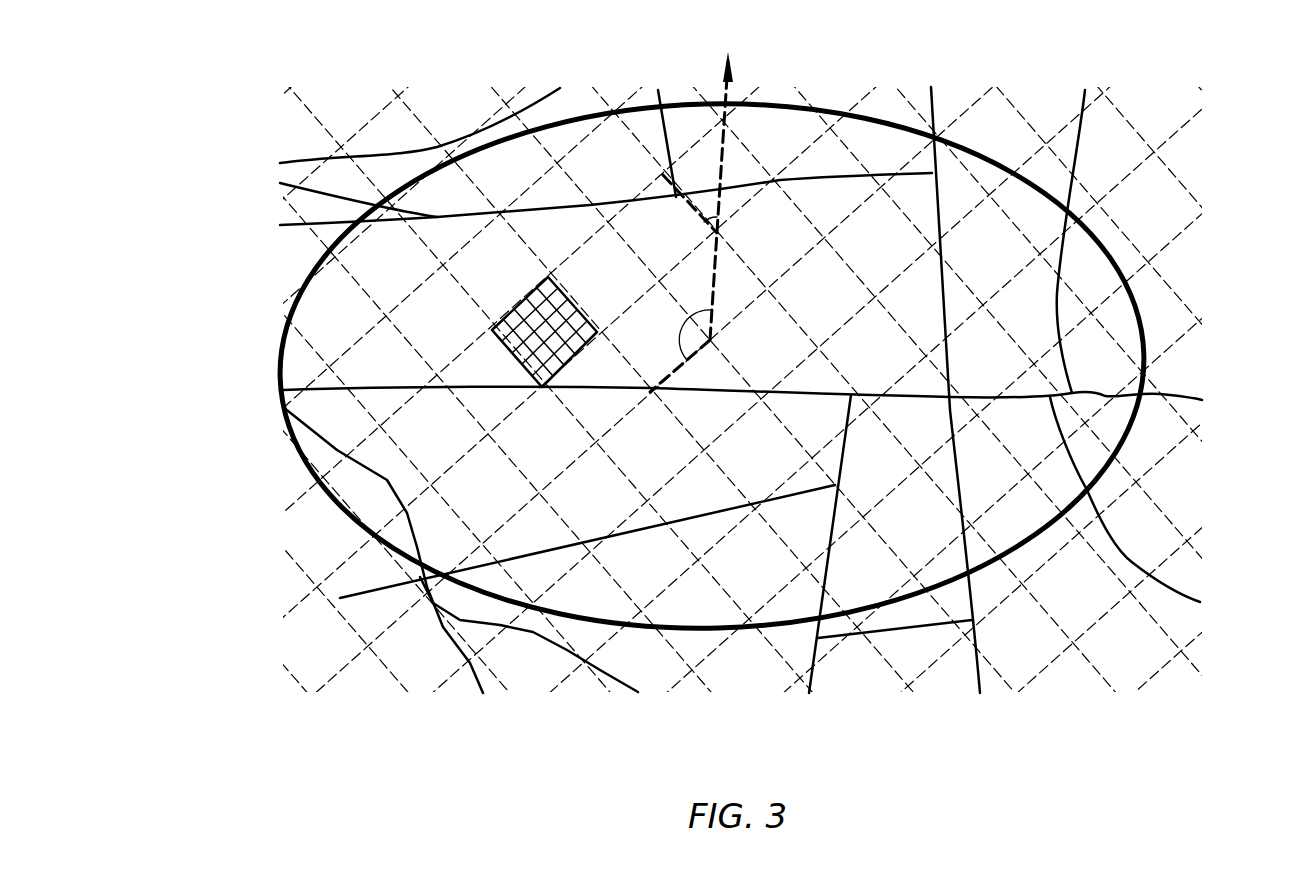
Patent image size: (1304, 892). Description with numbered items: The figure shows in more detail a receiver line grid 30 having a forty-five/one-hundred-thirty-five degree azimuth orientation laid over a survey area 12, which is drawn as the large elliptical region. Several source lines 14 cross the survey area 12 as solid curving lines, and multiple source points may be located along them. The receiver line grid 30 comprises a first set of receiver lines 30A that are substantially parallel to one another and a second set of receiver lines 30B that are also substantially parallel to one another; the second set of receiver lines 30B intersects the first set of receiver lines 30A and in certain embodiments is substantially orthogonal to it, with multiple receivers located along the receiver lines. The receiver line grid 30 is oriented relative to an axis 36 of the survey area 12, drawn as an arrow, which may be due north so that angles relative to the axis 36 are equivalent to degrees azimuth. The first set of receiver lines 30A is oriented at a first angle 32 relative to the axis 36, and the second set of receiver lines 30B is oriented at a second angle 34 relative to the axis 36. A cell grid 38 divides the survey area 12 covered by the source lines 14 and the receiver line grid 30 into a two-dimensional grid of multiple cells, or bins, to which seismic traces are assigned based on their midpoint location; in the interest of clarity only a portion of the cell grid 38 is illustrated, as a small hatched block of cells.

The survey area 12 is at (1110, 253).
The source lines 14 is at (932, 190).
The receiver line grid 30 is at (652, 446).
The first set of receiver lines 30A is at (327, 610).
The second set of receiver lines 30B is at (385, 625).
The first angle 32 is at (702, 216).
The second angle 34 is at (681, 333).
The axis 36 is at (722, 92).
The cell grid 38 is at (503, 326).